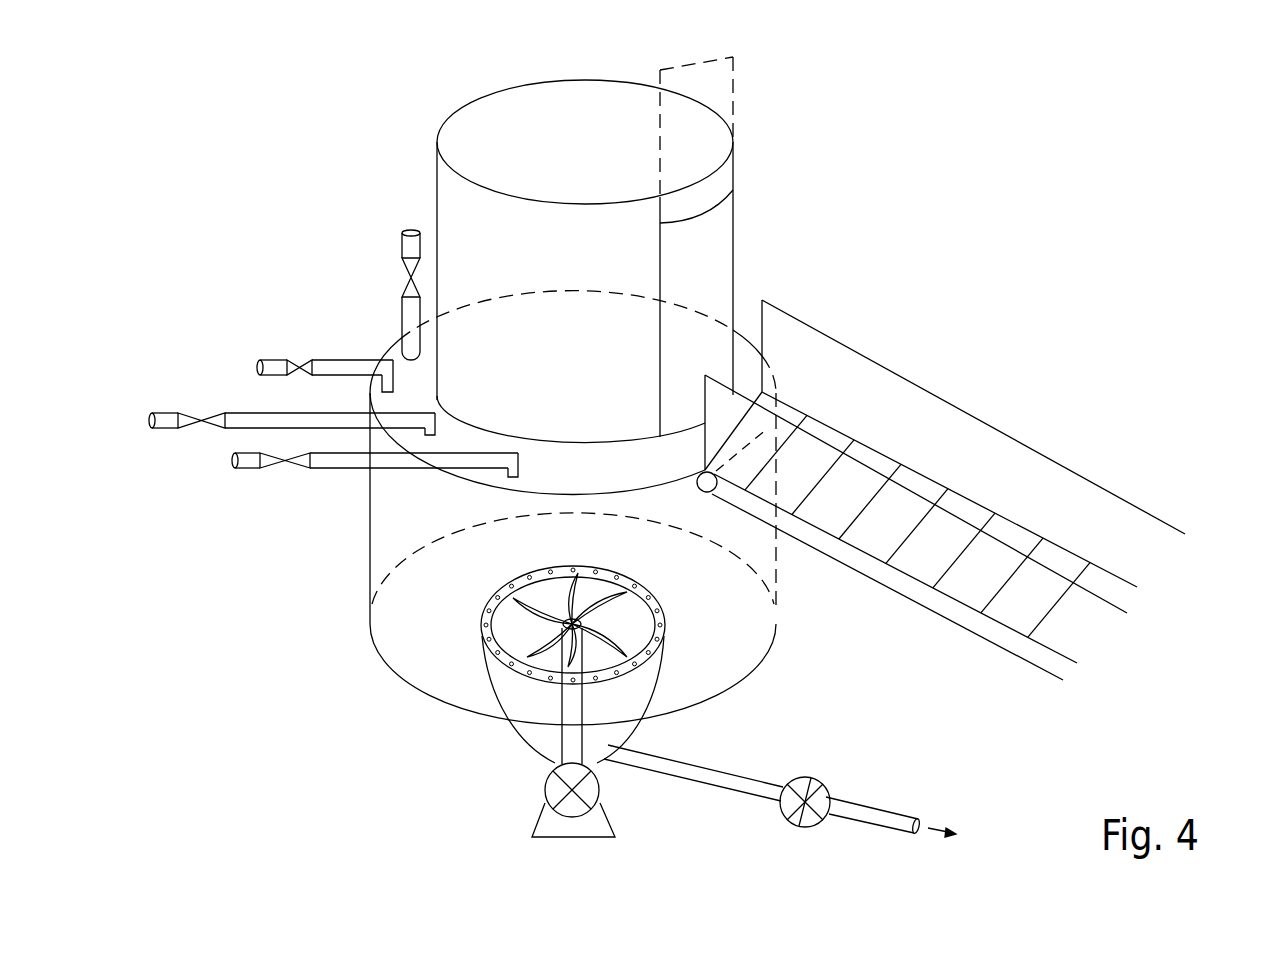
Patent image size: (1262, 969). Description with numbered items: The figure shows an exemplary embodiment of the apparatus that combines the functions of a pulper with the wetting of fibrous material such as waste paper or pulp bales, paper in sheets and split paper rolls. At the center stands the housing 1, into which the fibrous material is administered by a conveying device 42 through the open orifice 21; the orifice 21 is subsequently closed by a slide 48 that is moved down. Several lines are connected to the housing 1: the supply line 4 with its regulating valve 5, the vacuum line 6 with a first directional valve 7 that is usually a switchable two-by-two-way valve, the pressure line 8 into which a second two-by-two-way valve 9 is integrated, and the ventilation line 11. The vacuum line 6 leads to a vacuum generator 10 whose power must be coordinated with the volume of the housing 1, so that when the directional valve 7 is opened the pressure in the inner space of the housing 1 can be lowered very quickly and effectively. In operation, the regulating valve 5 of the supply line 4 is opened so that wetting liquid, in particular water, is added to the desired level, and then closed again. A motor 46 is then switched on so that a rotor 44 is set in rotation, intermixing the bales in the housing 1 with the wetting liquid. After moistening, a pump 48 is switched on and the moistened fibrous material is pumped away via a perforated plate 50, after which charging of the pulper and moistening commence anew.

The housing 1 is at (528, 150).
The supply line 4 is at (247, 470).
The regulating valve 5 is at (282, 466).
The vacuum line 6 is at (165, 425).
The first directional valve 7 is at (218, 416).
The pressure line 8 is at (270, 358).
The second 2/2-way valve 9 is at (302, 362).
The vacuum generator 10 is at (402, 238).
The ventilation line 11 is at (411, 277).
The open orifice 21 is at (728, 270).
The conveying device 42 is at (920, 485).
The rotor 44 is at (587, 593).
The motor 46 is at (543, 785).
The pump 48 is at (823, 783).
The perforated plate 50 is at (488, 603).